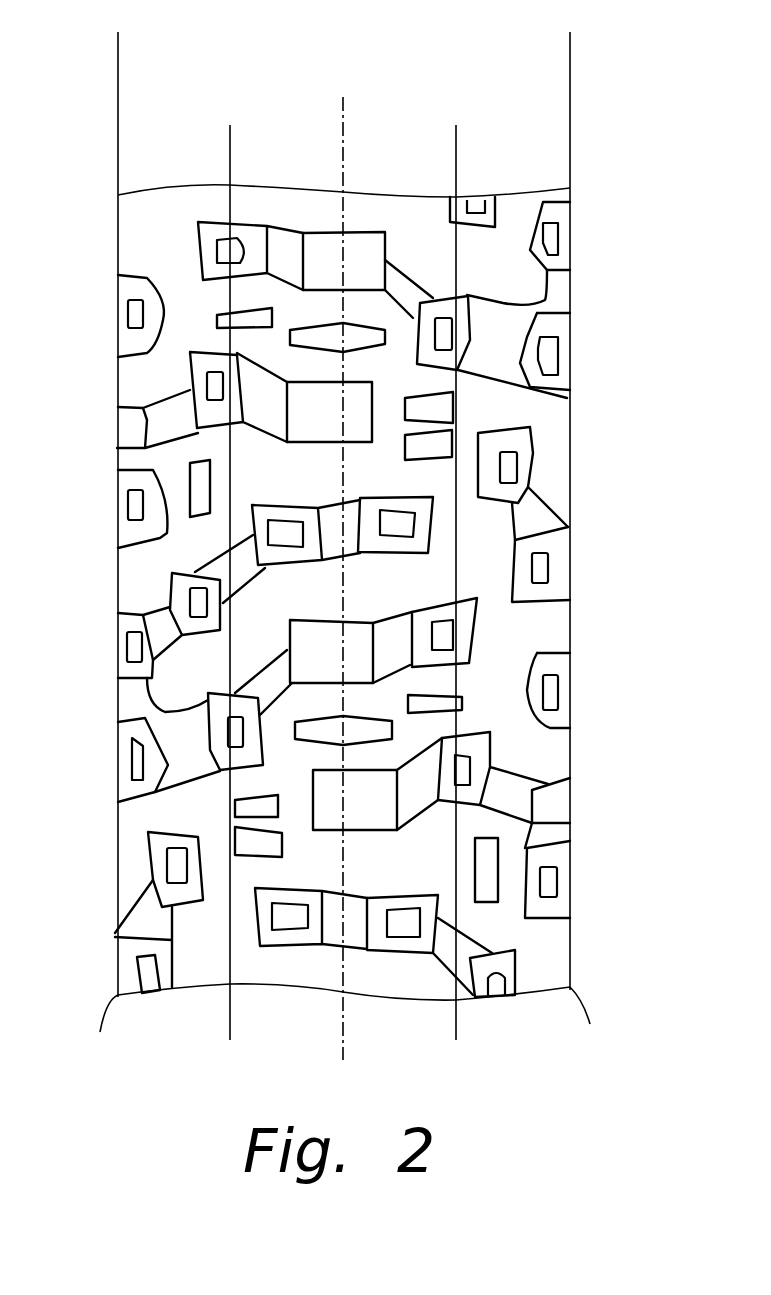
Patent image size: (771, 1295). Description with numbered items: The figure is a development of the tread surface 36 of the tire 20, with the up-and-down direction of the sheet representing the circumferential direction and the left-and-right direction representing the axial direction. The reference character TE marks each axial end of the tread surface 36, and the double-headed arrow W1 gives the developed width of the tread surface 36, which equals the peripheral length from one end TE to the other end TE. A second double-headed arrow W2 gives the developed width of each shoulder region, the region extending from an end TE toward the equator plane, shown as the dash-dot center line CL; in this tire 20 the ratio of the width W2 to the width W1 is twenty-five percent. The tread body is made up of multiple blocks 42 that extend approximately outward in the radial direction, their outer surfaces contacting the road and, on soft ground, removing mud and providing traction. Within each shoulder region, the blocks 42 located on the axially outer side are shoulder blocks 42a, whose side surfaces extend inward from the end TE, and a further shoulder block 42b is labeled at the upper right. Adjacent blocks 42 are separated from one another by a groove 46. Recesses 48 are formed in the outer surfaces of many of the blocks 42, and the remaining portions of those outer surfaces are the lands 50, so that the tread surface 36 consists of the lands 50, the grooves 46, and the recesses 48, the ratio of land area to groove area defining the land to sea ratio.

The tire 20 is at (664, 198).
The tread surface 36 is at (548, 623).
The block 42 is at (247, 232).
The shoulder block 42a is at (118, 287).
The shoulder block 42b is at (560, 262).
The groove 46 is at (198, 967).
The recess 48 is at (210, 382).
The land 50 is at (365, 253).
The developed width of the tread surface W1 is at (556, 46).
The developed width of the shoulder region W2 is at (556, 159).
The tire equatorial plane CL is at (365, 118).
The end of the tread surface TE is at (351, 1033).